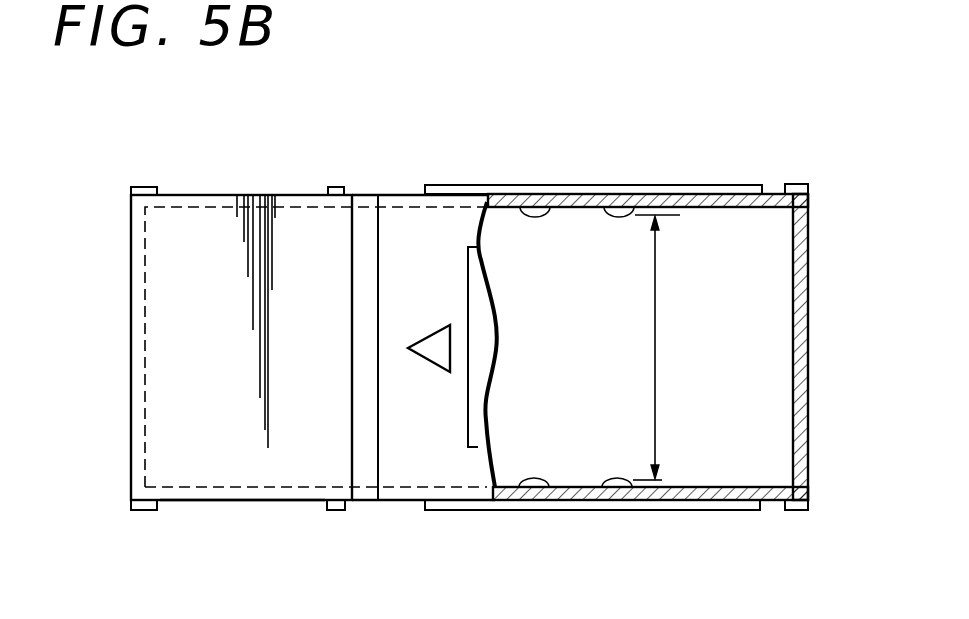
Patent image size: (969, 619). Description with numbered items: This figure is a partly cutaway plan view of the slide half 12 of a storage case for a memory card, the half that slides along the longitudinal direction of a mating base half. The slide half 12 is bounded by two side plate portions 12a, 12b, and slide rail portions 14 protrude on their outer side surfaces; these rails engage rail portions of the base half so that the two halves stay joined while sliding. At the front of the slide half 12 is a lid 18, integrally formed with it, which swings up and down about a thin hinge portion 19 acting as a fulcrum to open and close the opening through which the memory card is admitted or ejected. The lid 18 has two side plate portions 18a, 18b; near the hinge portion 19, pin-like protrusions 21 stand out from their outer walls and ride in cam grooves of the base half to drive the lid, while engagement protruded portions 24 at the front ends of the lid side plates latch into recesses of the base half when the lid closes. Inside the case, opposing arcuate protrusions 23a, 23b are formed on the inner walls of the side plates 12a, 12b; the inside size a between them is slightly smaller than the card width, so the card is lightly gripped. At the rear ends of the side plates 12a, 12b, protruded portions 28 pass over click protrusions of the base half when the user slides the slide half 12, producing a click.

The slide half 12 is at (473, 193).
The side plate portion of slide half 12a is at (586, 195).
The side plate portion of slide half 12b is at (582, 498).
The slide rail portions 14 is at (665, 185).
The lid 18 is at (173, 325).
The side plate portion of lid 18a is at (250, 195).
The side plate portion of lid 18b is at (248, 510).
The hinge portion 19 is at (370, 275).
The pin-like protrusions 21 is at (334, 187).
The arcuate protrusion 23a is at (535, 217).
The arcuate protrusion 23b is at (534, 478).
The engagement protruded portions 24 is at (143, 187).
The protruded portions 28 is at (800, 184).
The size between protrusions a is at (657, 347).